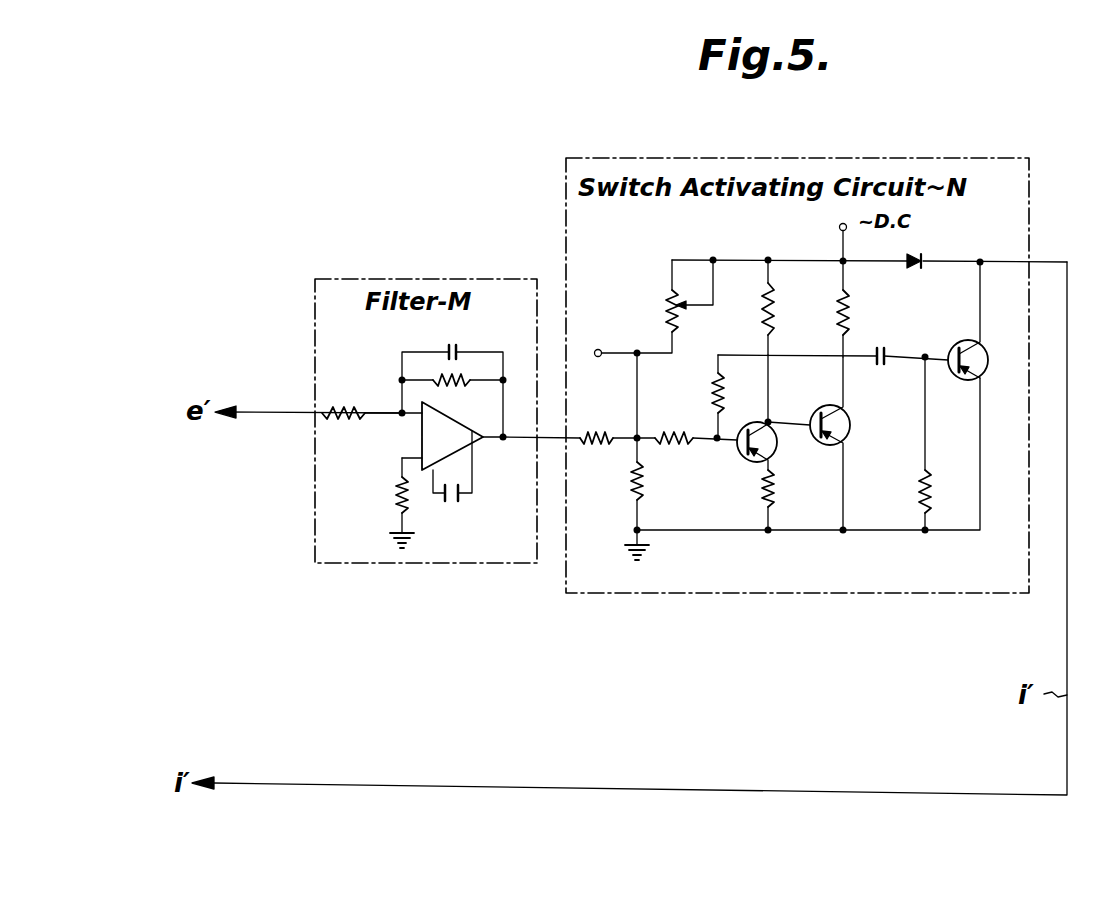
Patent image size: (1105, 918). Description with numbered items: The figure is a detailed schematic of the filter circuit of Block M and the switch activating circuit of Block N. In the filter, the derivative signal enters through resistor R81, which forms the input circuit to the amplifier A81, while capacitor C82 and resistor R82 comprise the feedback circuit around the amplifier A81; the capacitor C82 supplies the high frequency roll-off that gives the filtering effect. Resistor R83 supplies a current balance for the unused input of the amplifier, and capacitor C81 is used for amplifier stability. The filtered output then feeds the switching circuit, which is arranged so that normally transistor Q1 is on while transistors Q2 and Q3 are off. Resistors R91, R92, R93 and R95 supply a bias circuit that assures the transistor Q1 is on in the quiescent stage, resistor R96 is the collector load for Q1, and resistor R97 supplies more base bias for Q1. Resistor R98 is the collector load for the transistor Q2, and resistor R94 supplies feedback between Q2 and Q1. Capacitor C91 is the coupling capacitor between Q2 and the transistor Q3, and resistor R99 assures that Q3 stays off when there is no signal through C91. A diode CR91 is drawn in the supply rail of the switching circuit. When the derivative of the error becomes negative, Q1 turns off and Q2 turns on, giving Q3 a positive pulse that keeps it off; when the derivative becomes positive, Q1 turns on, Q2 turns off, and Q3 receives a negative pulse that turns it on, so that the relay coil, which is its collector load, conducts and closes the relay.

The resistor R81 is at (362, 399).
The resistor R82 is at (453, 391).
The resistor R83 is at (374, 503).
The capacitor C81 is at (451, 481).
The capacitor C82 is at (453, 379).
The amplifier A81 is at (478, 428).
The resistor R91 is at (594, 452).
The resistor R92 is at (663, 484).
The resistor R93 is at (675, 452).
The resistor R94 is at (692, 396).
The resistor R95 is at (661, 296).
The resistor R96 is at (792, 307).
The resistor R97 is at (792, 500).
The resistor R98 is at (869, 309).
The resistor R99 is at (949, 443).
The capacitor C91 is at (880, 369).
The diode CR91 is at (909, 275).
The transistor Q1 is at (773, 412).
The transistor Q2 is at (826, 443).
The transistor Q3 is at (983, 321).